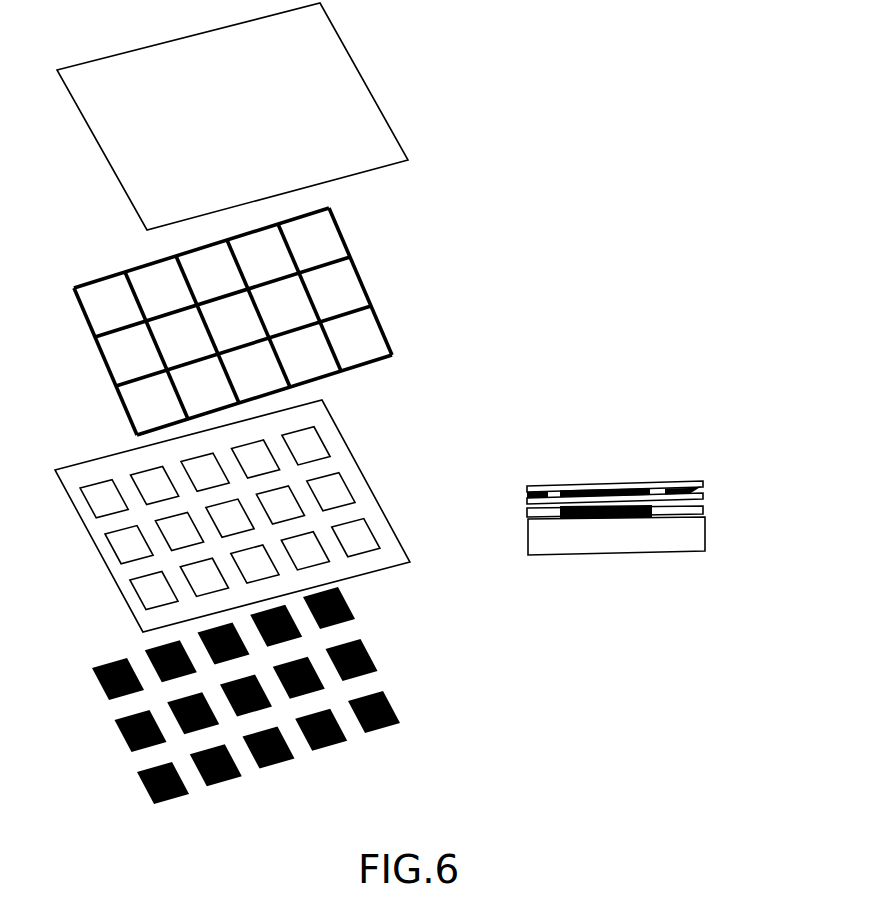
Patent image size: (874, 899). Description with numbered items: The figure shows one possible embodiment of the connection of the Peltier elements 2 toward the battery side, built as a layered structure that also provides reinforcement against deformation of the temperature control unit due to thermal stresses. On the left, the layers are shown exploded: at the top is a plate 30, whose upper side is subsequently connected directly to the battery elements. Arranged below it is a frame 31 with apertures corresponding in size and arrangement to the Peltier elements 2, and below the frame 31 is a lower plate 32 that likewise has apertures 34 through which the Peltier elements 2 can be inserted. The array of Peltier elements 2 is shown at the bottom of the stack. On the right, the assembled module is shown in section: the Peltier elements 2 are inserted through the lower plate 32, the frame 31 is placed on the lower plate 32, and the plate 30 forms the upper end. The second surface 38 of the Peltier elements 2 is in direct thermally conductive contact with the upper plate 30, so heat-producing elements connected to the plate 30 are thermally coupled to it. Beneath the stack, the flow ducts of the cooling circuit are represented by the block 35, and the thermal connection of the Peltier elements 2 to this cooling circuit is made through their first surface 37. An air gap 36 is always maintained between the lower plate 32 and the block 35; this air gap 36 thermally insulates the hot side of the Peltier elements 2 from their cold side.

The plate 30 is at (387, 113).
The frame 31 is at (393, 352).
The lower plate 32 is at (382, 507).
The apertures 34 is at (100, 498).
The Peltier elements 2 is at (368, 658).
The block 35 is at (692, 540).
The air gap 36 is at (698, 510).
The first surface 37 is at (622, 517).
The second surface 38 is at (632, 490).